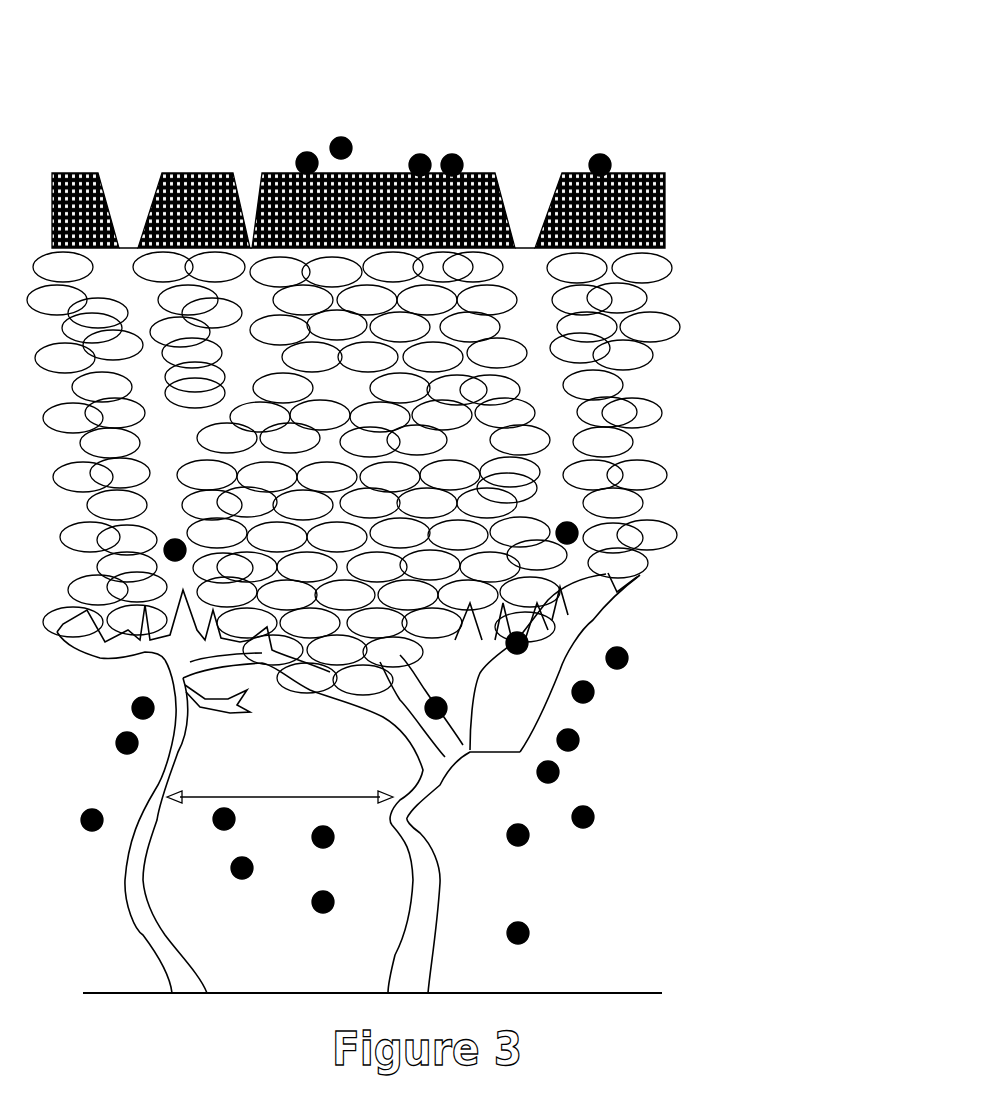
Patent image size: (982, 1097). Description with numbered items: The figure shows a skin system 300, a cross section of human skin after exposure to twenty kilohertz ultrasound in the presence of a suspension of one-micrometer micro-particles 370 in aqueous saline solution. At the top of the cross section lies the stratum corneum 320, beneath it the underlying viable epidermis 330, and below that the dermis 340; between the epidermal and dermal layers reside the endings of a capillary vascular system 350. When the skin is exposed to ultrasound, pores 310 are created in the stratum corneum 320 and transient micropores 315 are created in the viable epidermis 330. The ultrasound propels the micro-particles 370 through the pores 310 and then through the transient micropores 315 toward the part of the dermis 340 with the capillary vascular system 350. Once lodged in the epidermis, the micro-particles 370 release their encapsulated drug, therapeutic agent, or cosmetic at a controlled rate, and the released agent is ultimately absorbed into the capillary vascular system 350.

The skin system 300 is at (527, 92).
The pores 310 is at (517, 192).
The transient micropores 315 is at (165, 445).
The stratum corneum 320 is at (688, 172).
The viable epidermis 330 is at (691, 268).
The dermis 340 is at (691, 702).
The capillary vascular system 350 is at (280, 786).
The micro-particles 370 is at (573, 763).